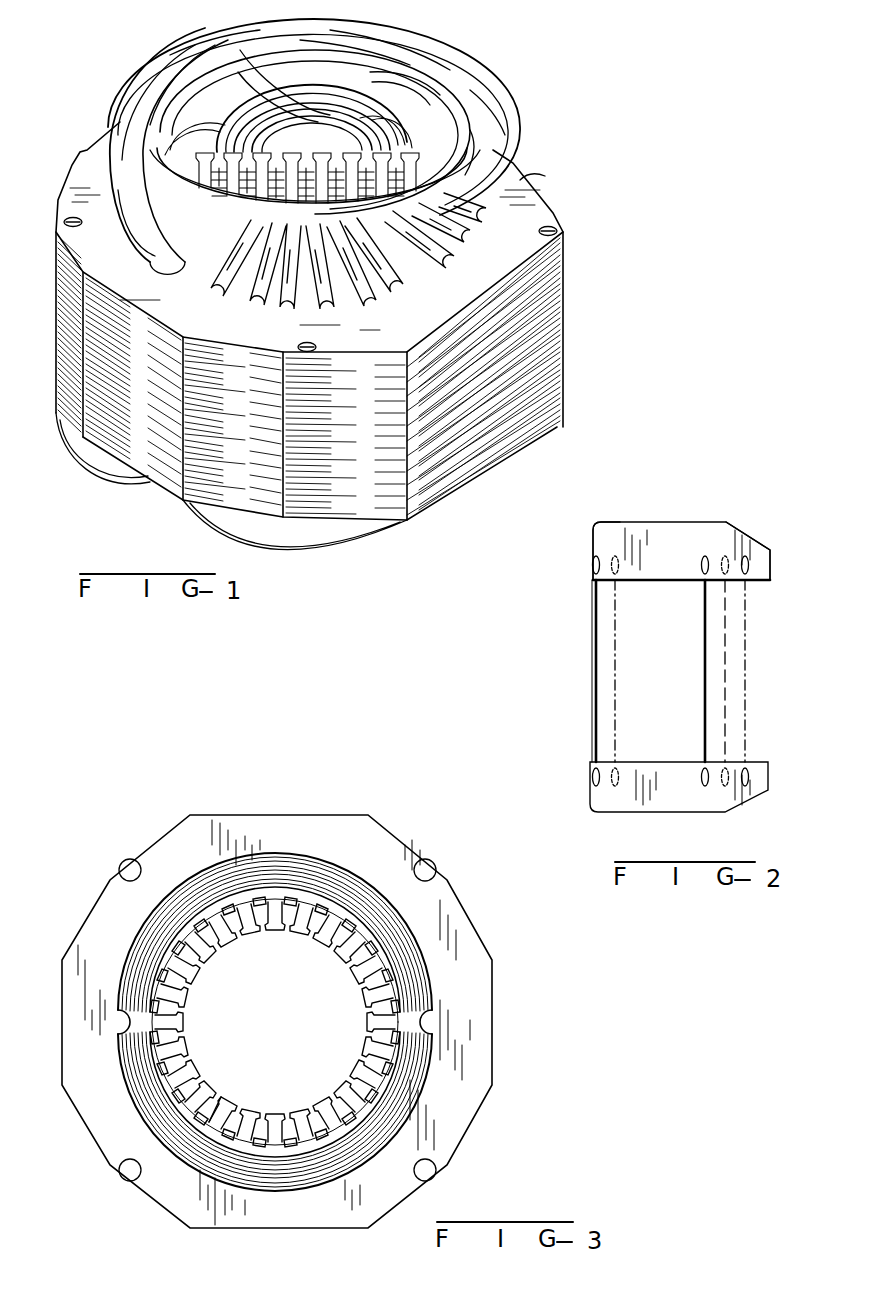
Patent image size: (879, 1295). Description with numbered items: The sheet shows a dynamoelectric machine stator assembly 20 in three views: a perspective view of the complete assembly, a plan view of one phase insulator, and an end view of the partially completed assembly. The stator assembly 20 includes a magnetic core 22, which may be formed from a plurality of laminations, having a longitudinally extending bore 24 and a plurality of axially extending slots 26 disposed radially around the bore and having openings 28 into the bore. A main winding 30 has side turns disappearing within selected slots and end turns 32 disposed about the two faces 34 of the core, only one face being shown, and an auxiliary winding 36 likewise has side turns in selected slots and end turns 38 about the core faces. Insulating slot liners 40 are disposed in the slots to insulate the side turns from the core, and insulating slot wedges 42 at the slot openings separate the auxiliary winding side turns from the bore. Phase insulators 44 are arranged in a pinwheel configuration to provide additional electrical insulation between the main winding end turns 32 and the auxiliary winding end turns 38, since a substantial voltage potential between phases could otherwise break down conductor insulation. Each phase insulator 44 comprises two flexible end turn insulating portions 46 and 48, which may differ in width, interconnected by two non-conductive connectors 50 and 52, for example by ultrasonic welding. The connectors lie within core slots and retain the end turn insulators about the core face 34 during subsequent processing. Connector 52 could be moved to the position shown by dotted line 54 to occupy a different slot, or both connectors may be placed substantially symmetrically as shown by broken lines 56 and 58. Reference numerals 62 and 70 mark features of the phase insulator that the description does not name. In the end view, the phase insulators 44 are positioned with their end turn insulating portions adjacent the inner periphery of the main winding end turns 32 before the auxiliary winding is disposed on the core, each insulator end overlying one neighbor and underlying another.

In FIG. 1, the stator assembly 20 is at (600, 167).
In FIG. 1, the magnetic core 22 is at (563, 276).
In FIG. 3, the magnetic core 22 is at (493, 1040).
In FIG. 1, the bore 24 is at (320, 158).
In FIG. 3, the bore 24 is at (294, 1005).
In FIG. 1, the slots 26 is at (483, 229).
In FIG. 1, the slot openings 28 is at (350, 133).
In FIG. 3, the slot openings 28 is at (200, 1110).
In FIG. 1, the main winding 30 is at (494, 118).
In FIG. 3, the main winding 30 is at (427, 987).
In FIG. 1, the end turns of main winding 32 is at (497, 128).
In FIG. 3, the end turns of main winding 32 is at (423, 963).
In FIG. 1, the faces of core 34 is at (520, 178).
In FIG. 3, the faces of core 34 is at (450, 937).
In FIG. 1, the auxiliary winding 36 is at (358, 78).
In FIG. 1, the end turns of auxiliary winding 38 is at (347, 137).
In FIG. 1, the insulating slot liners 40 is at (464, 265).
In FIG. 1, the insulating slot wedges 42 is at (377, 133).
In FIG. 1, the phase insulators 44 is at (197, 67).
In FIG. 2, the phase insulators 44 is at (677, 653).
In FIG. 3, the phase insulators 44 is at (264, 918).
In FIG. 2, the end turn insulating portion 46 is at (655, 522).
In FIG. 2, the end turn insulating portion 48 is at (636, 806).
In FIG. 2, the connector 50 is at (596, 630).
In FIG. 3, the connector 50 is at (177, 937).
In FIG. 2, the connector 52 is at (705, 640).
In FIG. 3, the connector 52 is at (200, 917).
In FIG. 2, the dotted line 54 is at (725, 669).
In FIG. 2, the broken line 56 is at (615, 652).
In FIG. 2, the broken line 58 is at (745, 704).
In FIG. 2, the chamfered corner 62 is at (768, 532).
In FIG. 2, the rounded corner 70 is at (596, 522).